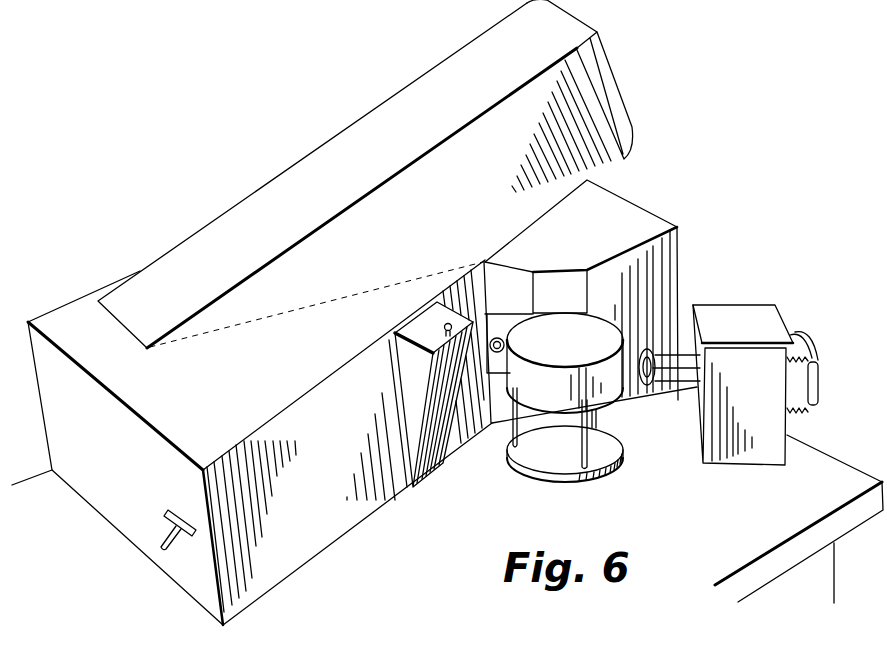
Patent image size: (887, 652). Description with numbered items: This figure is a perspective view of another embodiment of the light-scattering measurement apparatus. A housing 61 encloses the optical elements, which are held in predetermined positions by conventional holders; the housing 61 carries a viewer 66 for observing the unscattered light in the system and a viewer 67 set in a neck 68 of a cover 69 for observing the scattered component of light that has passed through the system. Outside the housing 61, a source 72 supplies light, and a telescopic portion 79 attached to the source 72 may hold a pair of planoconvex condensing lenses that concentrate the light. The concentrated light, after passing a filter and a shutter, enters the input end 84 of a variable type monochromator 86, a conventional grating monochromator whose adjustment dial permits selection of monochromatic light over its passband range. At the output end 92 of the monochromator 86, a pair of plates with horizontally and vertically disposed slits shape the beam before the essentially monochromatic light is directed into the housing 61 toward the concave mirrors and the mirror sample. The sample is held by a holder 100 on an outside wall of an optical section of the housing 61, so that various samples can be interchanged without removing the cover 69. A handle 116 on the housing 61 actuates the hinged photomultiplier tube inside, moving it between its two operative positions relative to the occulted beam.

The housing 61 is at (347, 537).
The viewer 66 is at (428, 382).
The viewer 67 is at (613, 66).
The neck 68 is at (455, 226).
The cover 69 is at (271, 388).
The source 72 is at (771, 392).
The telescopic portion 79 is at (684, 382).
The input end 84 is at (622, 335).
The variable type monochromator 86 is at (558, 401).
The output end 92 is at (573, 313).
The holder 100 is at (499, 326).
The handle 116 is at (172, 540).